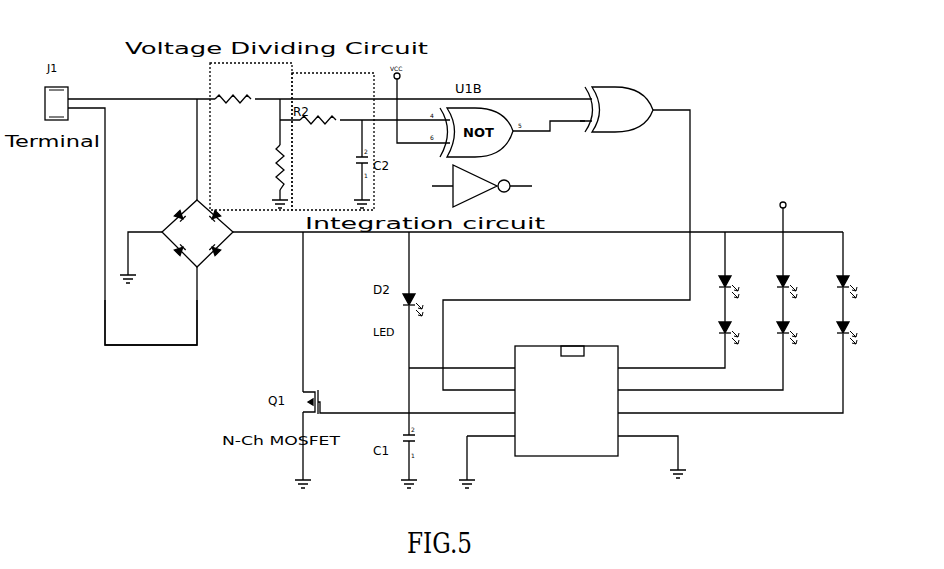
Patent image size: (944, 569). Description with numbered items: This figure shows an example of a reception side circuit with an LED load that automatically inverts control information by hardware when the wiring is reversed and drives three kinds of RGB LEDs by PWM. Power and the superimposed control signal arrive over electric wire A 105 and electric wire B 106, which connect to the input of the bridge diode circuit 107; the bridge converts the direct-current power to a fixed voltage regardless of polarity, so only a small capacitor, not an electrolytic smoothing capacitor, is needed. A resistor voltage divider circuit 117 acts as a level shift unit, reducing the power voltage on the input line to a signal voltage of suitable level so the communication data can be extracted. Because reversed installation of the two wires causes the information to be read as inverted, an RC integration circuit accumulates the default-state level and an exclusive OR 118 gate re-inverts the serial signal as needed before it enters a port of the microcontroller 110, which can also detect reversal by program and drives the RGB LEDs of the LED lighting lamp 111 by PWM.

The electric wire A 105 is at (312, 214).
The electric wire B 106 is at (151, 339).
The bridge diode circuit 107 is at (481, 240).
The microcontroller 110 is at (594, 406).
The LED lighting lamp 111 is at (754, 321).
The resistor voltage divider circuit 117 is at (242, 144).
The exclusive OR 118 is at (566, 229).